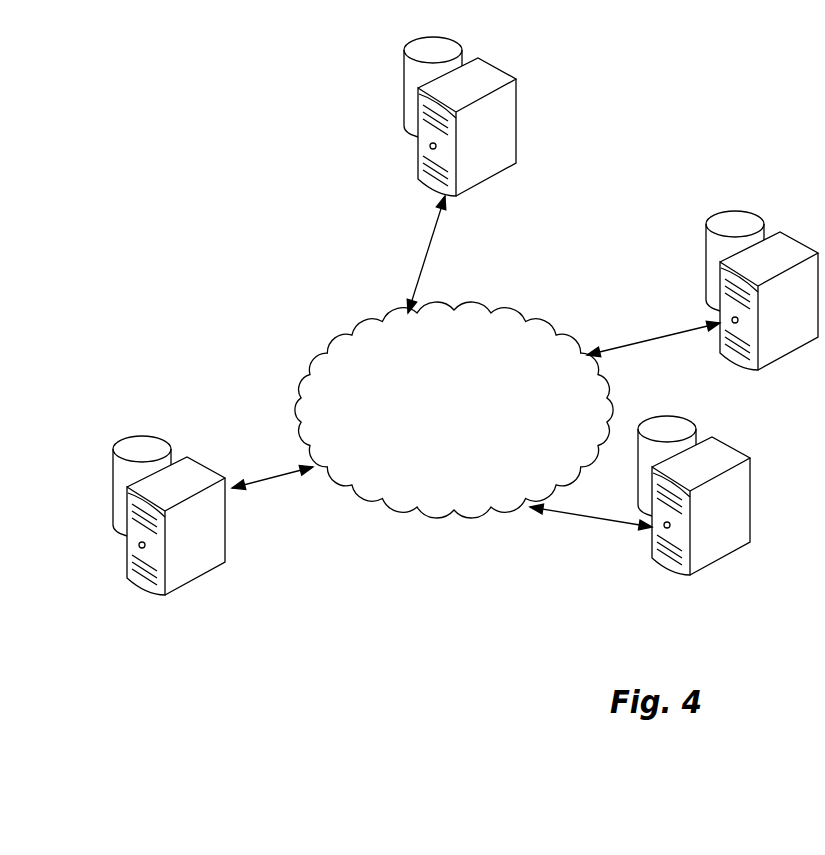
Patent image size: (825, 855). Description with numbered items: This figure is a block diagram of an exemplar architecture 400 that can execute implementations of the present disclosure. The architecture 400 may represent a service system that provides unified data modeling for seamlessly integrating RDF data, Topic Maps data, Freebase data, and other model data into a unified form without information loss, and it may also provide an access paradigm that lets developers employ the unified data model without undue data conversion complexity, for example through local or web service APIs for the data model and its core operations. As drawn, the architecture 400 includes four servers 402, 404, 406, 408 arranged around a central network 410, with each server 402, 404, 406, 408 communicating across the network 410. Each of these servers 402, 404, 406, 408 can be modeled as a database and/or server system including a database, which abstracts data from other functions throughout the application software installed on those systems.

The architecture 400 is at (290, 230).
The server 402 is at (418, 157).
The server 404 is at (720, 312).
The server 406 is at (735, 551).
The server 408 is at (212, 569).
The network 410 is at (297, 390).